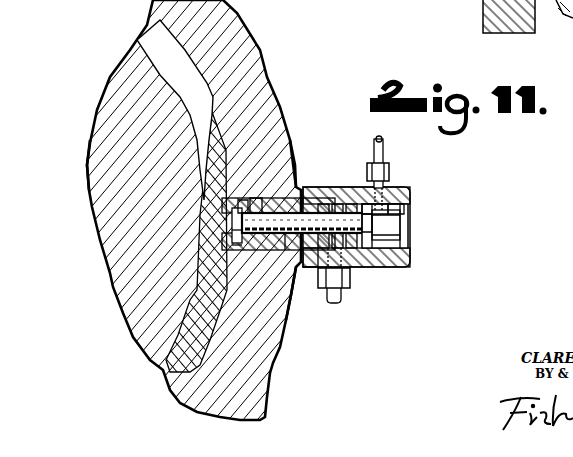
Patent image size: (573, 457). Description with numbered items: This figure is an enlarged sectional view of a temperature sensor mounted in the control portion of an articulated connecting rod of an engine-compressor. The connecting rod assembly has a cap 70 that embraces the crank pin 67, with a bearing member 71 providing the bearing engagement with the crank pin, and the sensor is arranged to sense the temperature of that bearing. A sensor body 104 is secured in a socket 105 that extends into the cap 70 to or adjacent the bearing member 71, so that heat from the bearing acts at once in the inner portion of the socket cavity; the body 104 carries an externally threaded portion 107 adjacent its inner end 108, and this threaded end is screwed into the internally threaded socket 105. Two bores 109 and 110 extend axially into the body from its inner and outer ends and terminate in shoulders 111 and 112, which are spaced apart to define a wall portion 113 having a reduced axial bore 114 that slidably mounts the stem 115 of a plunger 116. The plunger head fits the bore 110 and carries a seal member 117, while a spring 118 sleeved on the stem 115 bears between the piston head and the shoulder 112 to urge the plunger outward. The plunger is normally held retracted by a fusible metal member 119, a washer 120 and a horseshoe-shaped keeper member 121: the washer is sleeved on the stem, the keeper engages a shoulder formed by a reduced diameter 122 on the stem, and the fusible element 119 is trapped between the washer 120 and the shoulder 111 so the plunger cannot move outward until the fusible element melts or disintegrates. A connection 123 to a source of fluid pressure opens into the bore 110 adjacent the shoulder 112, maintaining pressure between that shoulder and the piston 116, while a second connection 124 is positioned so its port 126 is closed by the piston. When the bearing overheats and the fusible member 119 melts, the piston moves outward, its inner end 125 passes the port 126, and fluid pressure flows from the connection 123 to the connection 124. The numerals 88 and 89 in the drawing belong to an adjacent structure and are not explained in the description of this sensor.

The crank pin 67 is at (90, 147).
The cap 70 is at (268, 82).
The bearing member 71 is at (146, 33).
The block 88 is at (479, 3).
The block 89 is at (563, 24).
The body 104 is at (379, 265).
The socket 105 is at (300, 196).
The externally threaded portion 107 is at (291, 298).
The inner end 108 is at (237, 205).
The bore 109 is at (320, 204).
The bore 110 is at (410, 218).
The shoulder 111 is at (336, 204).
The shoulder 112 is at (351, 188).
The wall portion 113 is at (303, 263).
The axial bore 114 is at (275, 250).
The stem 115 is at (258, 246).
The plunger 116 is at (386, 229).
The seal member 117 is at (366, 267).
The spring 118 is at (383, 207).
The fusible metal member 119 is at (256, 200).
The washer 120 is at (246, 197).
The keeper member 121 is at (238, 250).
The reduced diameter 122 is at (230, 232).
The connection 123 is at (338, 302).
The second connection 124 is at (384, 141).
The inner end 125 is at (396, 211).
The port 126 is at (385, 216).